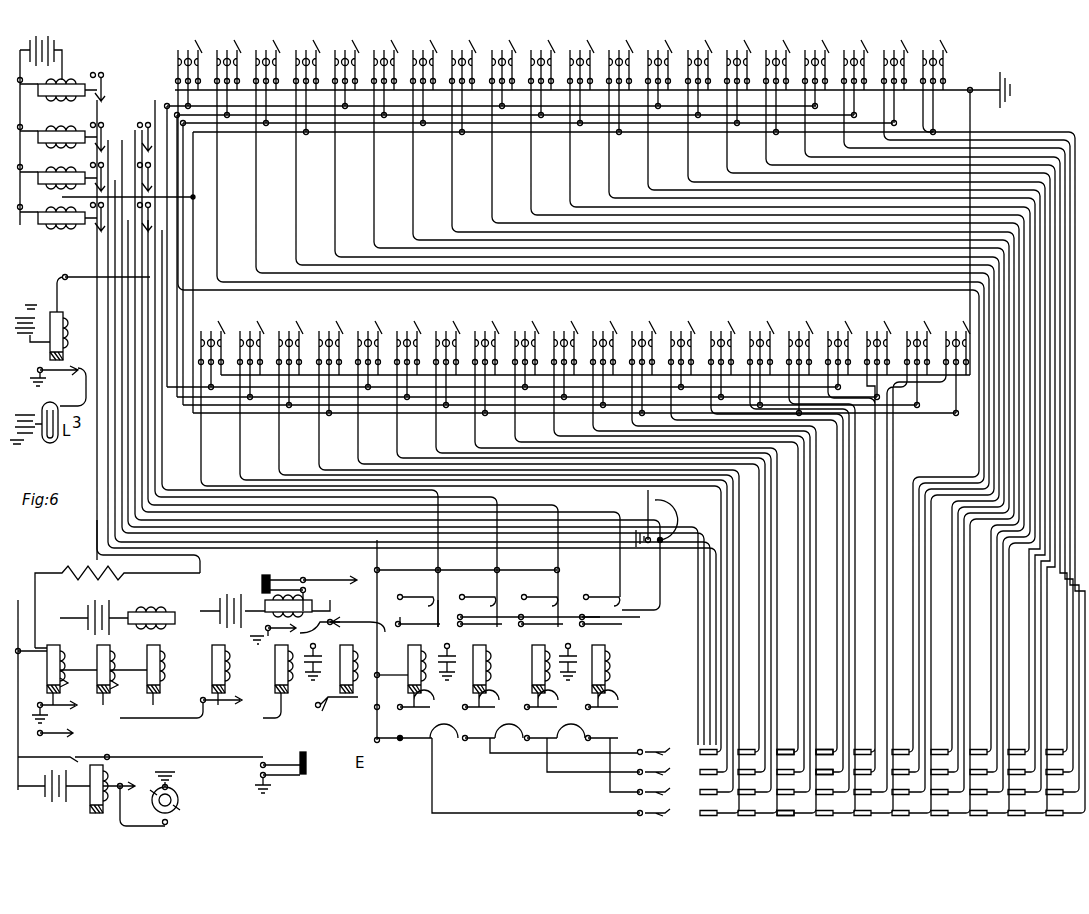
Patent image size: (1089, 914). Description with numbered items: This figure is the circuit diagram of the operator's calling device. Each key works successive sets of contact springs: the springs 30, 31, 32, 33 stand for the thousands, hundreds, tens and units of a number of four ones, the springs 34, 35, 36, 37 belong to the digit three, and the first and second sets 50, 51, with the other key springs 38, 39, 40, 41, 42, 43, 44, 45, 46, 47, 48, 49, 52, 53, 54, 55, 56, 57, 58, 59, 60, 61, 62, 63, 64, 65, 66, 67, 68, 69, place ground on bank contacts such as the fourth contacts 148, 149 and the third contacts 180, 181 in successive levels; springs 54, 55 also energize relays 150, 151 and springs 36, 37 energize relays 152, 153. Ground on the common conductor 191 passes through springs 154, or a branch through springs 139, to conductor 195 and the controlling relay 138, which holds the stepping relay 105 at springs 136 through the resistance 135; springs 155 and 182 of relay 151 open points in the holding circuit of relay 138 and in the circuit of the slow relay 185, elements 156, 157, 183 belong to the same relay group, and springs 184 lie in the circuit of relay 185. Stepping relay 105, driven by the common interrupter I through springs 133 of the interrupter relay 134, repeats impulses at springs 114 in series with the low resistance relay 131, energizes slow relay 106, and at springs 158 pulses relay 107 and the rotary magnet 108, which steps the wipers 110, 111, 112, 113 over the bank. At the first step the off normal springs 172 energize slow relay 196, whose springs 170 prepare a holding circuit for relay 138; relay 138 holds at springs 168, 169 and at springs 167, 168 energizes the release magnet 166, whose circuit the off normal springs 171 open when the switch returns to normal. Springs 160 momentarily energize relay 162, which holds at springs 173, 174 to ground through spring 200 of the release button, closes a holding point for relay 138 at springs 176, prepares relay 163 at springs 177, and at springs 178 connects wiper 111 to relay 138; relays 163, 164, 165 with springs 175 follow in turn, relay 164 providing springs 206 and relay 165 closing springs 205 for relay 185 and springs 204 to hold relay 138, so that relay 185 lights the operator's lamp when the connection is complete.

The contact springs 30 is at (183, 61).
The contact springs 31 is at (222, 61).
The contact springs 32 is at (261, 61).
The contact springs 33 is at (301, 61).
The contact springs 34 is at (340, 61).
The contact springs 35 is at (379, 61).
The contact springs 36 is at (418, 61).
The contact springs 37 is at (457, 61).
The key contact set 38 is at (497, 61).
The key contact set 39 is at (536, 61).
The key contact set 40 is at (575, 61).
The key contact set 41 is at (614, 61).
The key contact set 42 is at (653, 61).
The key contact set 43 is at (693, 61).
The key contact set 44 is at (732, 61).
The key contact set 45 is at (771, 61).
The key contact set 46 is at (810, 61).
The key contact set 47 is at (849, 61).
The key contact set 48 is at (889, 61).
The key contact set 49 is at (928, 61).
The contact springs 50 is at (206, 342).
The contact springs 51 is at (245, 342).
The key contact set 52 is at (284, 342).
The key contact set 53 is at (324, 342).
The contact springs 54 is at (363, 342).
The contact springs 55 is at (402, 342).
The key contact set 56 is at (441, 342).
The key contact set 57 is at (480, 342).
The key contact set 58 is at (520, 342).
The key contact set 59 is at (559, 342).
The key contact set 60 is at (598, 342).
The key contact set 61 is at (637, 342).
The key contact set 62 is at (676, 342).
The key contact set 63 is at (716, 342).
The key contact set 64 is at (755, 342).
The key contact set 65 is at (794, 342).
The key contact set 66 is at (833, 342).
The key contact set 67 is at (872, 342).
The key contact set 68 is at (912, 342).
The key contact set 69 is at (951, 342).
The relay 150 is at (62, 78).
The relay 151 is at (65, 94).
The relay 152 is at (65, 141).
The relay 153 is at (65, 182).
The springs 154 is at (104, 90).
The springs 155 is at (103, 145).
The relay contact 156 is at (103, 185).
The relay coil 157 is at (95, 225).
The springs 182 is at (150, 130).
The relay contact 183 is at (150, 178).
The springs 184 is at (150, 220).
The slow relay 185 is at (57, 312).
The common conductor 191 is at (97, 524).
The resistance 135 is at (117, 607).
The rotary magnet 108 is at (170, 614).
The stepping relay 105 is at (55, 645).
The slow relay 106 is at (110, 655).
The relay 107 is at (160, 650).
The low resistance relay 131 is at (212, 668).
The springs 158 is at (70, 706).
The springs 114 is at (73, 733).
The springs 139 is at (240, 704).
The springs 133 is at (140, 757).
The interrupter relay 134 is at (92, 808).
The common interrupter I is at (180, 798).
The release magnet 166 is at (270, 603).
The off normal springs 171 is at (274, 580).
The springs 136 is at (336, 589).
The conductor 195 is at (377, 556).
The springs 170 is at (268, 639).
The springs 167 is at (323, 615).
The springs 168 is at (354, 612).
The springs 169 is at (390, 615).
The slow relay 196 is at (268, 683).
The springs 160 is at (318, 720).
The off normal springs 172 is at (300, 774).
The controlling relay 138 is at (414, 655).
The relay 162 is at (414, 680).
The springs 173 is at (415, 626).
The springs 174 is at (435, 628).
The relay 163 is at (538, 655).
The relay 164 is at (538, 674).
The relay 165 is at (605, 655).
The springs 176 is at (418, 597).
The switch contact 175 is at (478, 597).
The springs 204 is at (602, 590).
The springs 205 is at (623, 620).
The springs 206 is at (605, 628).
The spring 200 is at (655, 503).
The springs 177 is at (420, 706).
The springs 178 is at (425, 738).
The wiper 110 is at (671, 752).
The wiper 111 is at (626, 767).
The wiper 112 is at (657, 777).
The wiper 113 is at (568, 787).
The bank contact 180 is at (785, 749).
The bank contact 181 is at (787, 810).
The bank contact 148 is at (822, 749).
The bank contact 149 is at (825, 769).